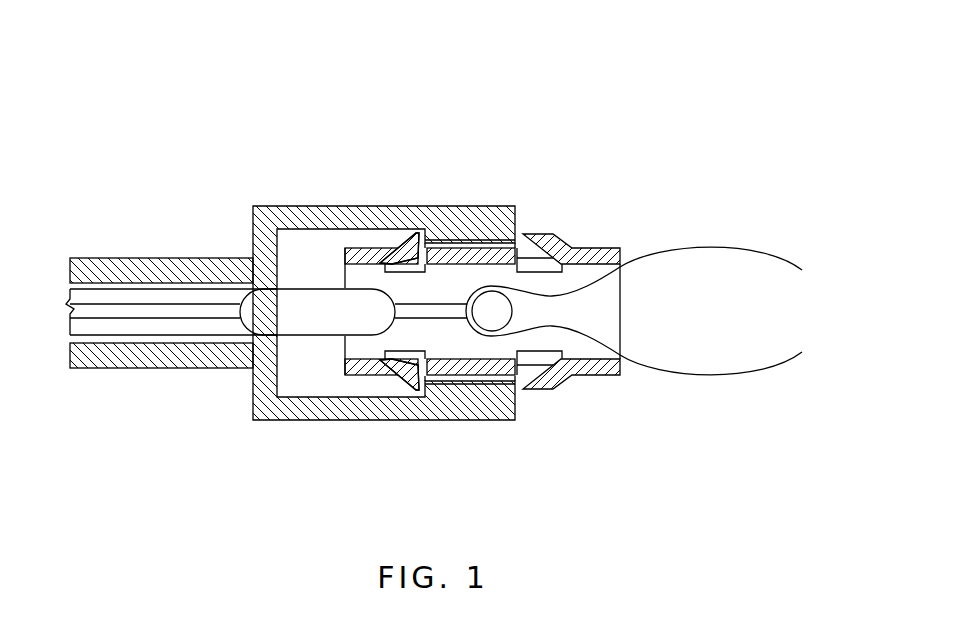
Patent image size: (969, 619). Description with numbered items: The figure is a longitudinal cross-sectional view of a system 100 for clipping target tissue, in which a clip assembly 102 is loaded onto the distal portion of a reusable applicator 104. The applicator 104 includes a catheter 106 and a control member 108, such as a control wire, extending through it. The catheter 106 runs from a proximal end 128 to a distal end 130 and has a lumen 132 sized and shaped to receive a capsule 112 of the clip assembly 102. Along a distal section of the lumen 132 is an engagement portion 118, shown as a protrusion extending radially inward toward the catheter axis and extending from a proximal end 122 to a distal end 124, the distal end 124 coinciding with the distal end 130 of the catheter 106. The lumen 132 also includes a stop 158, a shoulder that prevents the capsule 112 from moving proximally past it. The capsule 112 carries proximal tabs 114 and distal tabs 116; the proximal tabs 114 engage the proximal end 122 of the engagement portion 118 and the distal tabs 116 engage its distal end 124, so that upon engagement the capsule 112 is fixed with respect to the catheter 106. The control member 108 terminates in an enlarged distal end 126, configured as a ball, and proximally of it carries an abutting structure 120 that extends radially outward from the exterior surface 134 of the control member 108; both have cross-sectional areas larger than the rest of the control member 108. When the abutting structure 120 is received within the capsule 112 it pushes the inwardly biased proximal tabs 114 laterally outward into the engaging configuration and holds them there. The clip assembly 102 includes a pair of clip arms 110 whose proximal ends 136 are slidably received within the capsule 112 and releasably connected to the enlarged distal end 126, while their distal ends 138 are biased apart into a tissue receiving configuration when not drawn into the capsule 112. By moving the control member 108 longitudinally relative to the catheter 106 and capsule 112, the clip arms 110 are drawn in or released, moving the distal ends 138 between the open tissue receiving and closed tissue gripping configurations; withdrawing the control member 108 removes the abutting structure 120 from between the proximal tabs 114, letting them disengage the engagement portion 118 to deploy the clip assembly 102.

The system 100 is at (389, 117).
The clip assembly 102 is at (593, 207).
The applicator 104 is at (270, 167).
The catheter 106 is at (338, 205).
The control member 108 is at (137, 308).
The clip arms 110 is at (695, 245).
The capsule 112 is at (447, 367).
The proximal tabs 114 is at (410, 238).
The distal tabs 116 is at (553, 387).
The engagement portion 118 is at (452, 240).
The abutting structure 120 is at (273, 303).
The proximal end of engagement portion 122 is at (428, 236).
The distal end of engagement portion 124 is at (530, 236).
The enlarged distal end 126 is at (487, 305).
The proximal end of catheter 128 is at (80, 265).
The distal end of catheter 130 is at (510, 247).
The lumen 132 is at (328, 377).
The exterior surface 134 is at (185, 303).
The proximal ends of clip arms 136 is at (487, 340).
The distal ends of clip arms 138 is at (800, 270).
The stop 158 is at (277, 370).